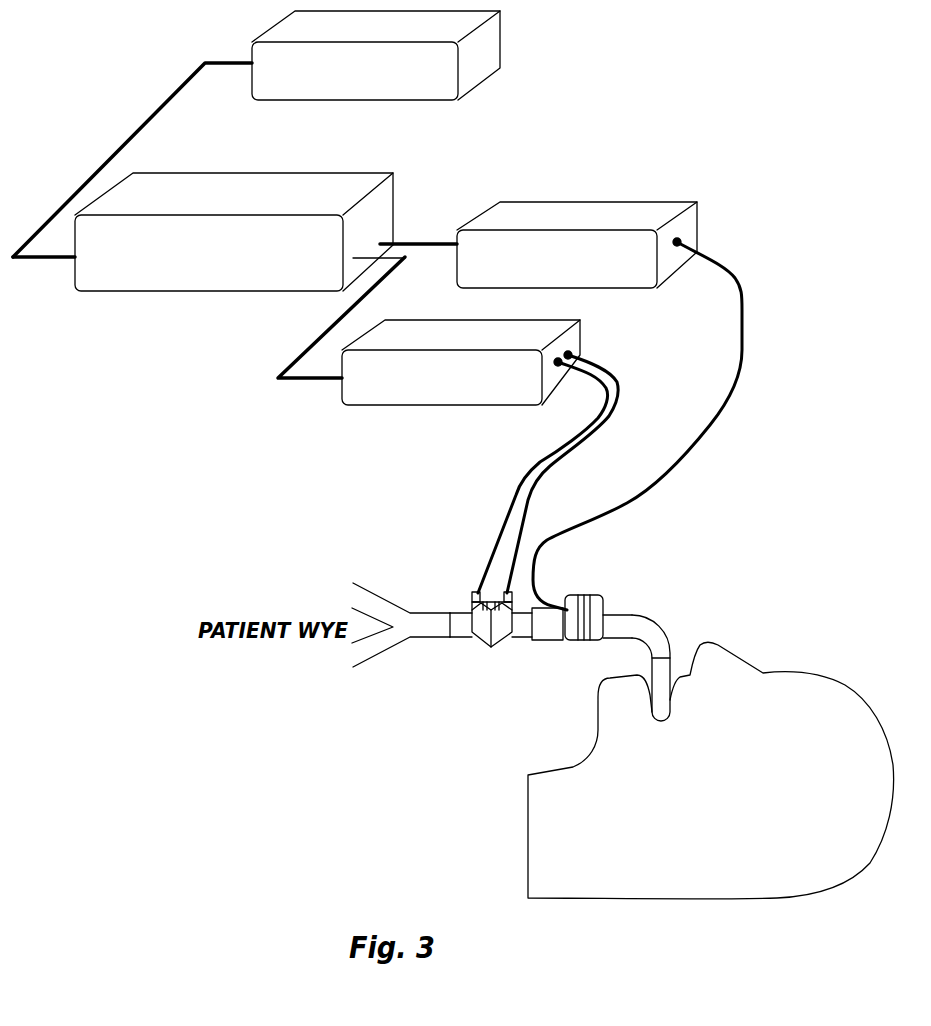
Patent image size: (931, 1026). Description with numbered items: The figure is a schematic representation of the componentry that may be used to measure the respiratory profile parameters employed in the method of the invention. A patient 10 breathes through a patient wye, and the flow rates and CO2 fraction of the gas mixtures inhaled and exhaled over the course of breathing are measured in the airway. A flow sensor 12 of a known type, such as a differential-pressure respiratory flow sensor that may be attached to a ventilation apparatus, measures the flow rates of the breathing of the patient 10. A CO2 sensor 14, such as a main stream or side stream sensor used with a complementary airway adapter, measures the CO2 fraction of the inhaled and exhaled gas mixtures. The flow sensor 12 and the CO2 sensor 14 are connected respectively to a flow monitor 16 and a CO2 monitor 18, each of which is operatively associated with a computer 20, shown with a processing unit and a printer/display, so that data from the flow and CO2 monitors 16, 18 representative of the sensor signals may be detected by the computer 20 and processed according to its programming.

The patient 10 is at (547, 850).
The flow sensor 12 is at (482, 638).
The CO2 sensor 14 is at (597, 615).
The flow monitor 16 is at (383, 392).
The CO2 monitor 18 is at (592, 212).
The computer 20 is at (91, 64).